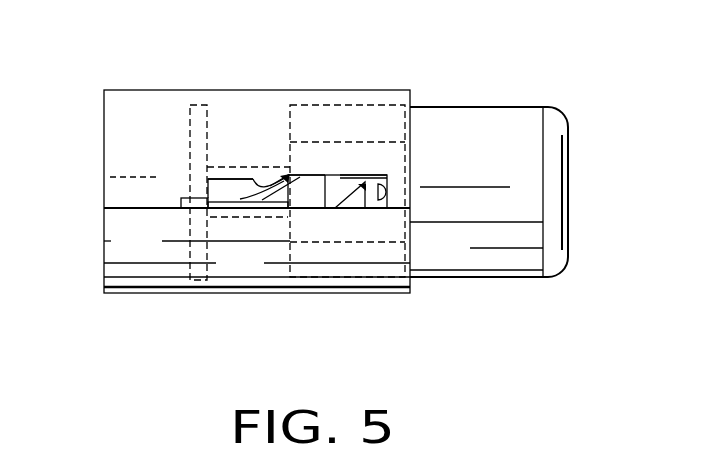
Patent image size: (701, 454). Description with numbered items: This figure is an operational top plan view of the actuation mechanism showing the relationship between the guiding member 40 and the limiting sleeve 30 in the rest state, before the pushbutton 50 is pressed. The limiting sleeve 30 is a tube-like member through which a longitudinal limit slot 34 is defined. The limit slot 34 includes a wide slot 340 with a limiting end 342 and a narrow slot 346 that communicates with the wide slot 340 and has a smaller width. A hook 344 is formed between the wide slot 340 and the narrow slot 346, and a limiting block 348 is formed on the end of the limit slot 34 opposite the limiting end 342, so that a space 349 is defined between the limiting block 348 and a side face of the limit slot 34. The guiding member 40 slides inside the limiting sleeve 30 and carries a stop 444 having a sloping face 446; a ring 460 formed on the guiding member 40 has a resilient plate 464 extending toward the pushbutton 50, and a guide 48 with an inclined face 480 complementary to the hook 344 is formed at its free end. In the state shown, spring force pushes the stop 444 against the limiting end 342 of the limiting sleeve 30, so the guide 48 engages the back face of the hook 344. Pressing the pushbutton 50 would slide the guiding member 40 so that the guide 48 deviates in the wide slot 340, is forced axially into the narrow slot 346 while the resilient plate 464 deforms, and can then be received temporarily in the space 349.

The limiting sleeve 30 is at (104, 293).
The limit slot 34 is at (312, 208).
The guiding member 40 is at (519, 100).
The guide 48 is at (298, 177).
The pushbutton 50 is at (568, 207).
The wide slot 340 is at (363, 176).
The limiting end 342 is at (387, 182).
The hook 344 is at (255, 177).
The narrow slot 346 is at (232, 178).
The limiting block 348 is at (213, 195).
The space 349 is at (179, 203).
The stop 444 is at (380, 208).
The sloping face 446 is at (362, 208).
The ring 460 is at (195, 282).
The resilient plate 464 is at (237, 208).
The inclined face 480 is at (275, 177).